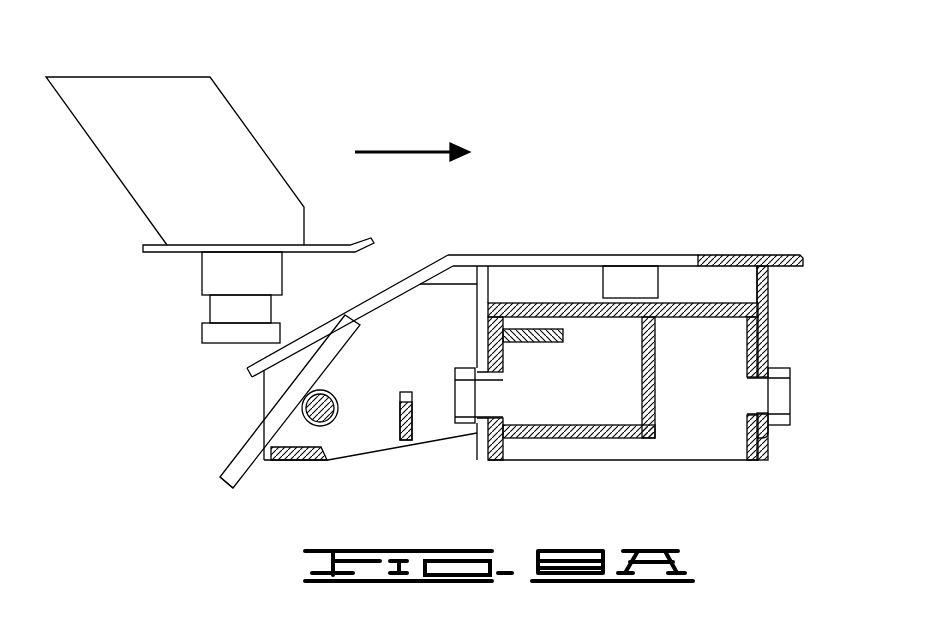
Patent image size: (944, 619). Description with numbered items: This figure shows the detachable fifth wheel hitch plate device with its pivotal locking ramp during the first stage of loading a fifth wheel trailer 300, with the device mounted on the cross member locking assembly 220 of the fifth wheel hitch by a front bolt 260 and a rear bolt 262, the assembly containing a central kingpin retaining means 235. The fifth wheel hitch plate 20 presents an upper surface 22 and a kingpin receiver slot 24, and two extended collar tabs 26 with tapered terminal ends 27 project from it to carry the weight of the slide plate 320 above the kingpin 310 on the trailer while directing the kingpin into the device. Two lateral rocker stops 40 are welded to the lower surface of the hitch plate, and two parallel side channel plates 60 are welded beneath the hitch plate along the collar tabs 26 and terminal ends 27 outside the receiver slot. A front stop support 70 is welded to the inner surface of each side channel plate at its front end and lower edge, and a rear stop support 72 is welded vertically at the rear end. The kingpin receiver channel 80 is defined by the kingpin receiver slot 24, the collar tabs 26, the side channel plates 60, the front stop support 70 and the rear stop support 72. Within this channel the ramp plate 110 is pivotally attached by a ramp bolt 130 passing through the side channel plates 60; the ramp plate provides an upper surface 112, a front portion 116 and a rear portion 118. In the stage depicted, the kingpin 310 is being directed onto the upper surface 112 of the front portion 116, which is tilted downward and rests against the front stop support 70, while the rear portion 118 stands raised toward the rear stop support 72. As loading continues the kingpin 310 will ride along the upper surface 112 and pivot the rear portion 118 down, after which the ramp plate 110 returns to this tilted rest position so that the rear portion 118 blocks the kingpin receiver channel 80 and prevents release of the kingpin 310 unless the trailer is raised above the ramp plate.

The fifth wheel trailer 300 is at (170, 103).
The slide plate 320 is at (140, 247).
The kingpin 310 is at (228, 310).
The extended collar tabs 26 is at (397, 280).
The tapered terminal ends 27 is at (248, 372).
The rear portion 118 is at (340, 338).
The front portion 116 is at (228, 477).
The upper surface 112 is at (285, 396).
The ramp plate 110 is at (247, 455).
The front stop support 70 is at (300, 460).
The ramp bolt 130 is at (322, 420).
The rear stop support 72 is at (410, 440).
The side channel plates 60 is at (455, 293).
The kingpin receiver slot 24 is at (648, 263).
The fifth wheel hitch plate 20 is at (690, 255).
The upper surface 22 is at (540, 257).
The kingpin receiver channel 80 is at (570, 415).
The central kingpin retaining means 235 is at (557, 330).
The lateral rocker stops 40 is at (653, 292).
The front bolt 260 is at (465, 420).
The rear bolt 262 is at (785, 400).
The cross member locking assembly 220 is at (754, 455).